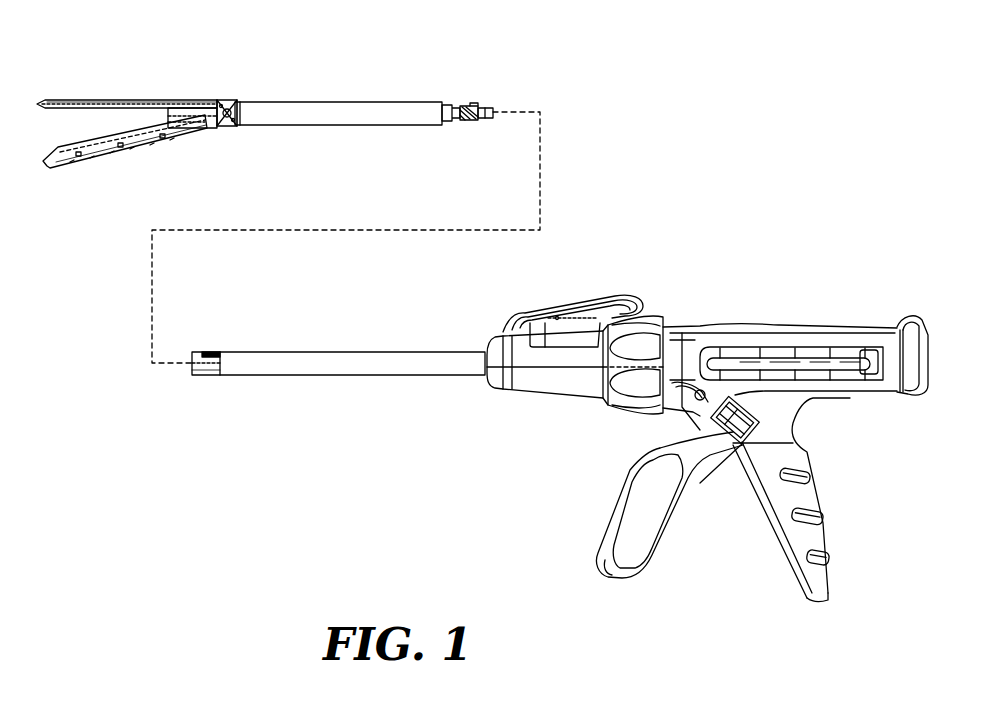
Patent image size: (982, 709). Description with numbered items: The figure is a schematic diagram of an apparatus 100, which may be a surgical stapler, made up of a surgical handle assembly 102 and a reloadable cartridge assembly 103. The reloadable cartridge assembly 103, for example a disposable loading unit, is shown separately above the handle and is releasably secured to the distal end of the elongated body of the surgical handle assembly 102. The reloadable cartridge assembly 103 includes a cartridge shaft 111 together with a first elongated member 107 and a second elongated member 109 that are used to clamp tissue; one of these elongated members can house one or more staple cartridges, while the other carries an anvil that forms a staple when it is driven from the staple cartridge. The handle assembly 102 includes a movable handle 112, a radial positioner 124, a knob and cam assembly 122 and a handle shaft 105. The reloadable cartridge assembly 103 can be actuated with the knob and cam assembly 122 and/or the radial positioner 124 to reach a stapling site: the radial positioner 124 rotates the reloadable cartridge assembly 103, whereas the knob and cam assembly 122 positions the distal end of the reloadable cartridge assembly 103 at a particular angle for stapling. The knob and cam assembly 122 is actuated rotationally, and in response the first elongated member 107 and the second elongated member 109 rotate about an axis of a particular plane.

The apparatus 100 is at (790, 101).
The surgical handle assembly 102 is at (783, 330).
The reloadable cartridge assembly 103 is at (368, 107).
The handle shaft 105 is at (327, 367).
The first elongated member 107 is at (135, 142).
The second elongated member 109 is at (80, 100).
The cartridge shaft 111 is at (318, 125).
The movable handle 112 is at (605, 517).
The knob and cam assembly 122 is at (587, 298).
The radial positioner 124 is at (670, 320).